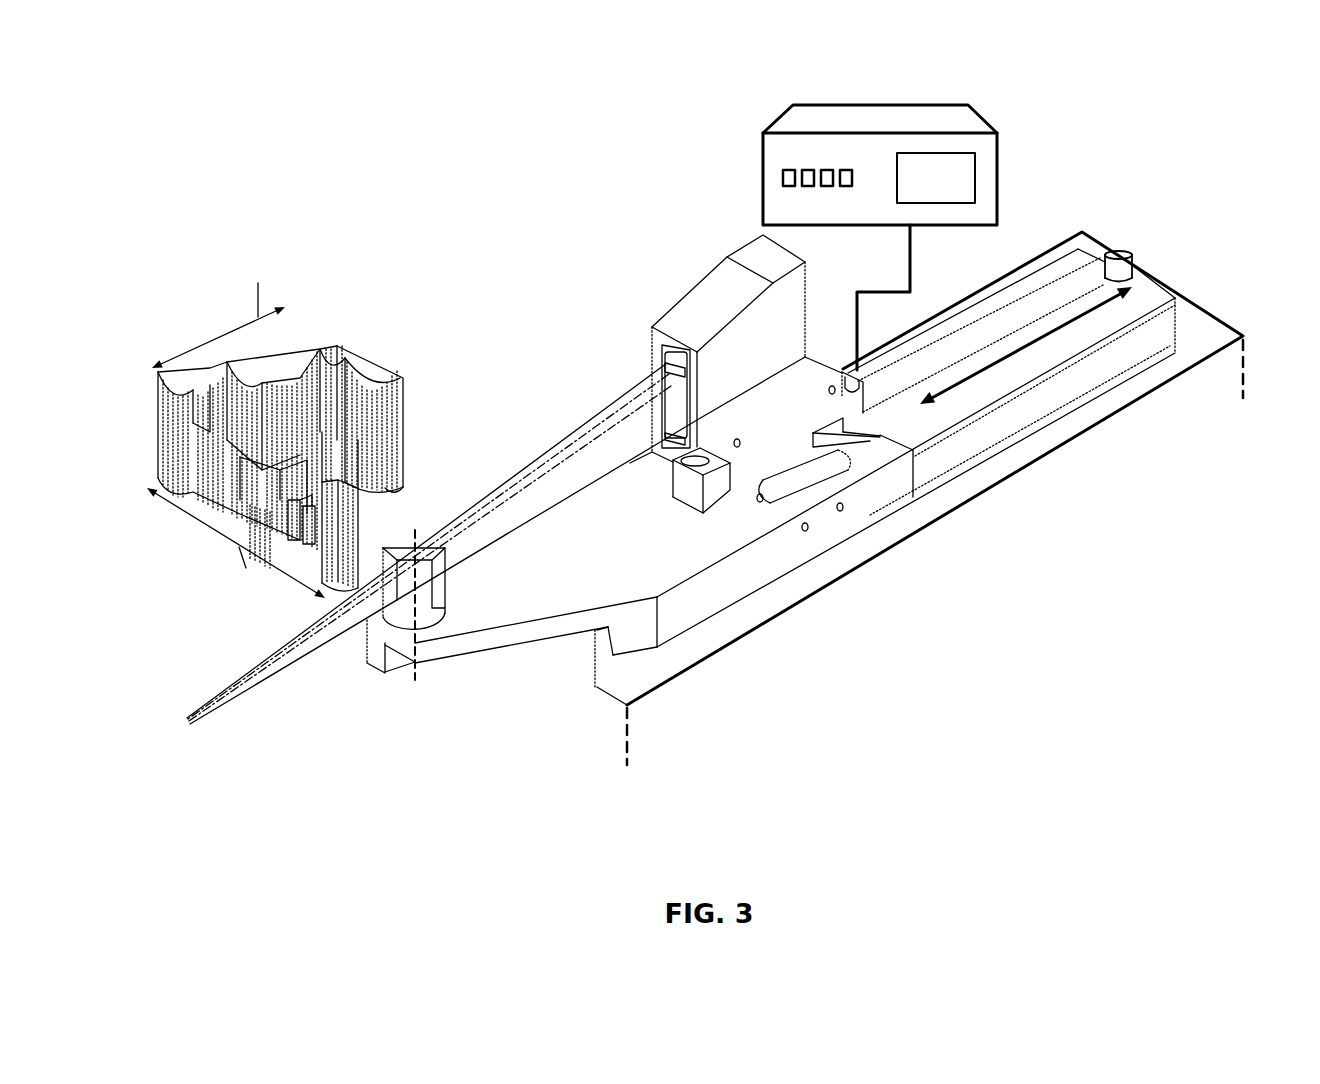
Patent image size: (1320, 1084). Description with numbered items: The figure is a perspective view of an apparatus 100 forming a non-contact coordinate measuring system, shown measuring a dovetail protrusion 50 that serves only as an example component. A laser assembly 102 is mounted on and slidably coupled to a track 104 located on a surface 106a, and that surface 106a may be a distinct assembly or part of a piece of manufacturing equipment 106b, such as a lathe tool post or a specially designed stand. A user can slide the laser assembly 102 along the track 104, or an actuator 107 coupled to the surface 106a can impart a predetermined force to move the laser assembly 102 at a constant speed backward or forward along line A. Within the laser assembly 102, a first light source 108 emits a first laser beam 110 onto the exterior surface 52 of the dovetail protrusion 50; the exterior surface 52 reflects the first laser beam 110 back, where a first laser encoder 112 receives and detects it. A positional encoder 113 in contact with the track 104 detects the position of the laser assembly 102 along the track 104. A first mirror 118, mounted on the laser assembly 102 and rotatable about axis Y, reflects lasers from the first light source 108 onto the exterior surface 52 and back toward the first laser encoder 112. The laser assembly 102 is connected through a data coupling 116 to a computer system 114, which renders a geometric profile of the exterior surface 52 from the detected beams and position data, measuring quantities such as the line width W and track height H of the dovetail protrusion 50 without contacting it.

The dovetail protrusion 50 is at (399, 343).
The exterior surface 52 is at (397, 453).
The apparatus 100 is at (630, 252).
The laser assembly 102 is at (781, 564).
The track 104 is at (1018, 333).
The surface 106a is at (1078, 265).
The manufacturing equipment 106b is at (1152, 280).
The actuator 107 is at (1131, 253).
The first light source 108 is at (687, 328).
The first laser beam 110 is at (583, 493).
The first laser encoder 112 is at (665, 373).
The positional encoder 113 is at (785, 464).
The computer system 114 is at (924, 188).
The data coupling 116 is at (873, 290).
The first mirror 118 is at (437, 598).